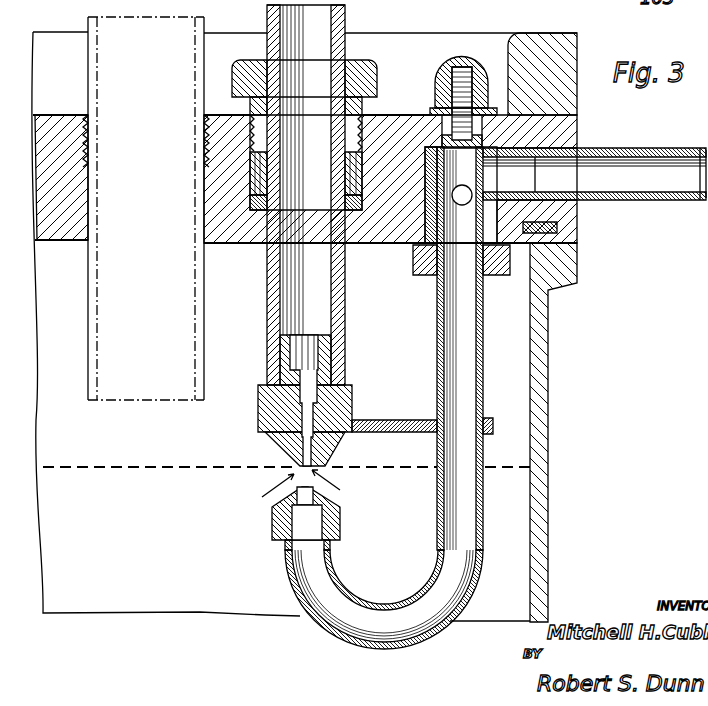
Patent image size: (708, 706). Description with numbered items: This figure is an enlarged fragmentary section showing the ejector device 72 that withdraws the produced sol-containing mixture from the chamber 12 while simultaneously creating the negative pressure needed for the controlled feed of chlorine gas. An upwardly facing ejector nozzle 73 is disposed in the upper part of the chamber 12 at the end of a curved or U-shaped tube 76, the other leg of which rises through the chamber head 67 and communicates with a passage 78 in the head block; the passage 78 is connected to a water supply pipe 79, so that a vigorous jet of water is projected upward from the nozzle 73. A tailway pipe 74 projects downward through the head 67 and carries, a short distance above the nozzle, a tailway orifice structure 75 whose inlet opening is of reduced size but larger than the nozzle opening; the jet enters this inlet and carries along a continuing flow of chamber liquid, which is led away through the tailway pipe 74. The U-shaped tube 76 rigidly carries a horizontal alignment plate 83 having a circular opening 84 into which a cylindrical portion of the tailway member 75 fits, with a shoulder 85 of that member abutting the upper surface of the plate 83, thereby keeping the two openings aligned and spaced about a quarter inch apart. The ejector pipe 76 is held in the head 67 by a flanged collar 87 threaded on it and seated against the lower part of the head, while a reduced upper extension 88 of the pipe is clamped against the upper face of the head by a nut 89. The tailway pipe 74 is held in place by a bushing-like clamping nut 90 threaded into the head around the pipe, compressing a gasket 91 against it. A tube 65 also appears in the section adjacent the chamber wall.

The chamber 12 is at (548, 353).
The tube 65 is at (204, 17).
The chamber head 67 is at (575, 222).
The ejector device 72 is at (352, 531).
The ejector nozzle 73 is at (336, 488).
The tailway pipe 74 is at (267, 298).
The tailway orifice structure 75 is at (277, 443).
The U-shaped tube 76 is at (372, 648).
The passage 78 is at (530, 147).
The water supply pipe 79 is at (671, 201).
The alignment plate 83 is at (395, 420).
The circular opening 84 is at (328, 446).
The shoulder 85 is at (262, 415).
The flanged collar 87 is at (497, 276).
The reduced upper extension 88 is at (443, 128).
The nut 89 is at (458, 63).
The clamping nut 90 is at (360, 65).
The gasket 91 is at (244, 241).